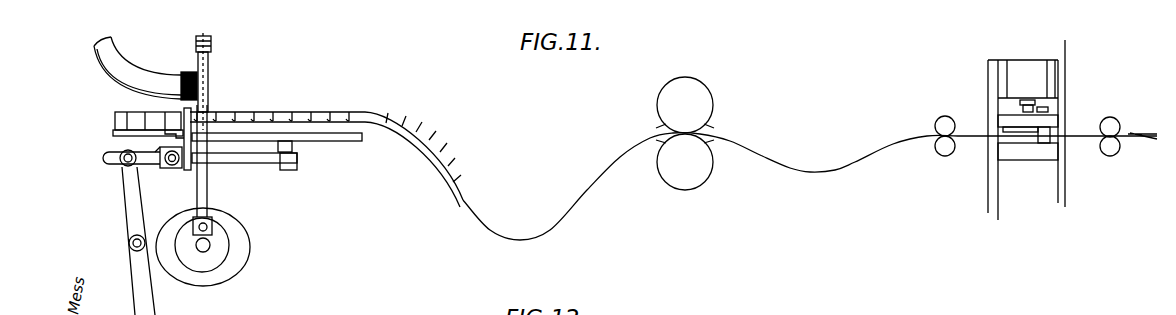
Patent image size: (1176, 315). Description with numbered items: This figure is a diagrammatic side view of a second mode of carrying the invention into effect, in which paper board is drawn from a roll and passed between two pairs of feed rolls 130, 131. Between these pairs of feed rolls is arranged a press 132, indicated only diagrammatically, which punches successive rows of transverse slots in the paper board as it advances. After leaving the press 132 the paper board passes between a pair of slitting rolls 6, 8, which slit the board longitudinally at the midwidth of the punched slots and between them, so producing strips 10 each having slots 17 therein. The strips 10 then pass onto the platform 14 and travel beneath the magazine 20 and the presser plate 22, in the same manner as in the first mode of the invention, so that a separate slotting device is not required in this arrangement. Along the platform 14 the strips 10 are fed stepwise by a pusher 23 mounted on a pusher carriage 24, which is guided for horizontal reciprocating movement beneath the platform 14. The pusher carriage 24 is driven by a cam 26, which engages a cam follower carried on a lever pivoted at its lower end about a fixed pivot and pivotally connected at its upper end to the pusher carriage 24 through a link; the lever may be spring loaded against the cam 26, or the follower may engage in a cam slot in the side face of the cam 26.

The slitting roll 6 is at (670, 97).
The slitting roll 8 is at (698, 170).
The strips 10 is at (280, 120).
The platform 14 is at (327, 141).
The slots 17 is at (253, 117).
The magazine 20 is at (130, 73).
The presser plate 22 is at (208, 63).
The pusher 23 is at (155, 160).
The pusher carriage 24 is at (240, 163).
The cam 26 is at (170, 260).
The feed rolls 130 is at (1107, 168).
The feed rolls 131 is at (947, 123).
The press 132 is at (1053, 122).